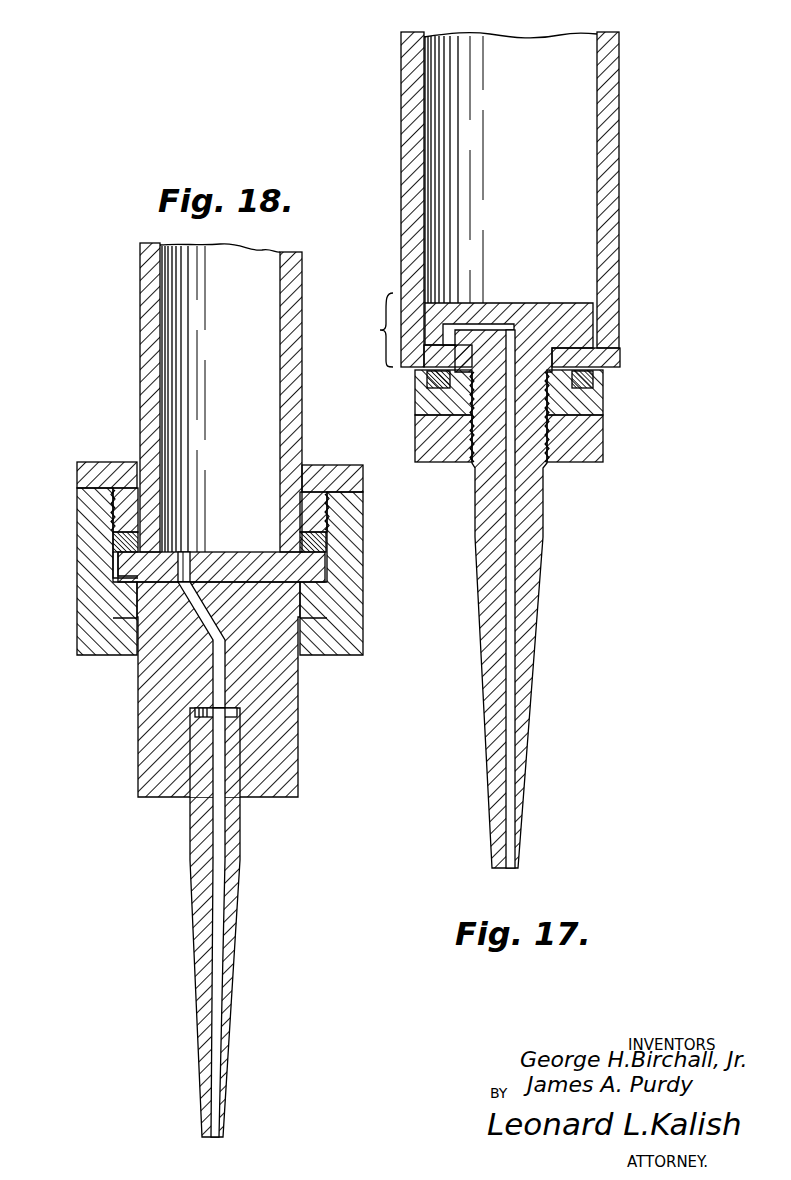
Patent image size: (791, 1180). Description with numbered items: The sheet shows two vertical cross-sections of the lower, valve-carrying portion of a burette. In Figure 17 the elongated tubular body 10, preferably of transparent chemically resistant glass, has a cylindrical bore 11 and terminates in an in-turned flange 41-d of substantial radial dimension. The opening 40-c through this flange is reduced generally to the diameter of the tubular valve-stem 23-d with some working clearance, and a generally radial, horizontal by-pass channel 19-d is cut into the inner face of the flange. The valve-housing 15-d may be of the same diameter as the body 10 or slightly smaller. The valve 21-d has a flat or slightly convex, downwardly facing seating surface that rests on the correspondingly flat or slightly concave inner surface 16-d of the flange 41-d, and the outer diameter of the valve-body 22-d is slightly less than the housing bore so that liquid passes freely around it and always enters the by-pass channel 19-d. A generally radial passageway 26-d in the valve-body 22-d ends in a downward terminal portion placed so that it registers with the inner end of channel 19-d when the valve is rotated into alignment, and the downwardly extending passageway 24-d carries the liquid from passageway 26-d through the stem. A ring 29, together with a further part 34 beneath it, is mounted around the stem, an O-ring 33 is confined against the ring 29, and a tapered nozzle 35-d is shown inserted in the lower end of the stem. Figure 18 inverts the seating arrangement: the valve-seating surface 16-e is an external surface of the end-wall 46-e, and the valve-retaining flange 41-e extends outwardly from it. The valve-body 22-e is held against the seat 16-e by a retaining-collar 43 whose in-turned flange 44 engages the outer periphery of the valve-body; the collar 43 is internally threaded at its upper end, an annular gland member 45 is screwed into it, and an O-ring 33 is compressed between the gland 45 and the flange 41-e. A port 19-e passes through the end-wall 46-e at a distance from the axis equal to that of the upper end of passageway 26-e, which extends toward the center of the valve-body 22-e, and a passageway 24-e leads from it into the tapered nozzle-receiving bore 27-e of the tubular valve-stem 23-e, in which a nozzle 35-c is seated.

In FIG. 17, the tubular body 10 is at (620, 75).
In FIG. 18, the tubular body 10 is at (140, 273).
In FIG. 17, the bore 11 is at (424, 114).
In FIG. 18, the bore 11 is at (280, 312).
In FIG. 17, the valve-housing 15-d is at (363, 330).
In FIG. 17, the inner surface of flange 16-d is at (587, 340).
In FIG. 17, the by-pass channel 19-d is at (440, 348).
In FIG. 17, the valve 21-d is at (578, 288).
In FIG. 17, the valve-body 22-d is at (583, 320).
In FIG. 17, the tubular valve-stem 23-d is at (440, 433).
In FIG. 17, the downwardly extending passageway 24-d is at (508, 515).
In FIG. 17, the radial passageway 26-d is at (448, 327).
In FIG. 17, the ring 29 is at (597, 405).
In FIG. 17, the O-ring 33 is at (427, 390).
In FIG. 18, the O-ring 33 is at (113, 538).
In FIG. 17, the lock nut 34 is at (593, 440).
In FIG. 17, the needle 35-d is at (527, 647).
In FIG. 17, the opening 40-c is at (573, 358).
In FIG. 17, the in-turned flange 41-d is at (583, 370).
In FIG. 18, the valve-seating surface 16-e is at (273, 582).
In FIG. 18, the port 19-e is at (182, 560).
In FIG. 18, the valve-body 22-e is at (110, 594).
In FIG. 18, the tubular valve-stem 23-e is at (150, 700).
In FIG. 18, the passageway 24-e is at (220, 697).
In FIG. 18, the passageway 26-e is at (208, 623).
In FIG. 18, the tapered nozzle-receiving bore 27-e is at (197, 752).
In FIG. 18, the needle 35-c is at (237, 900).
In FIG. 18, the valve-retaining flange 41-e is at (113, 568).
In FIG. 18, the retaining-collar 43 is at (85, 623).
In FIG. 18, the in-turned flange 44 is at (123, 645).
In FIG. 18, the annular gland member 45 is at (85, 467).
In FIG. 18, the end-wall 46-e is at (267, 560).